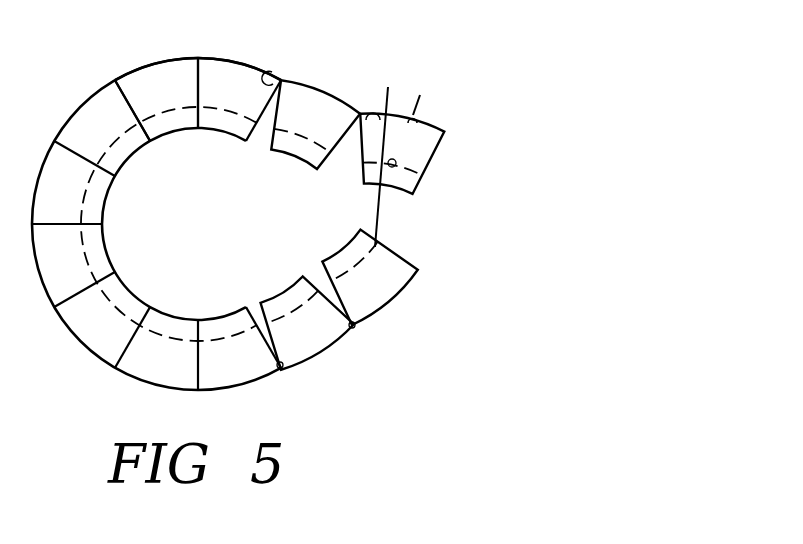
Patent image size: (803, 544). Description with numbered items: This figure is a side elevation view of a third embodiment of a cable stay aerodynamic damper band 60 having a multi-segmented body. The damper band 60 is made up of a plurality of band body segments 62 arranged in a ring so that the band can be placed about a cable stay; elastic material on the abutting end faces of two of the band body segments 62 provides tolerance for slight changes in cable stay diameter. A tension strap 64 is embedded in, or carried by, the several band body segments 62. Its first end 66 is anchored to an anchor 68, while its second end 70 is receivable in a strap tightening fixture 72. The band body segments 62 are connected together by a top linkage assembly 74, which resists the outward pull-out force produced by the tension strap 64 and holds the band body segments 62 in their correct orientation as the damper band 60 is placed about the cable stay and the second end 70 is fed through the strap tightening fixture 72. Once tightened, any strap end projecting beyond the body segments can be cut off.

The cable stay aerodynamic damper band 60 is at (317, 198).
The band body segments 62 is at (142, 82).
The tension strap 64 is at (277, 132).
The first end 66 is at (415, 112).
The anchor 68 is at (414, 122).
The second end 70 is at (388, 96).
The strap tightening fixture 72 is at (360, 112).
The top linkage assembly 74 is at (259, 76).